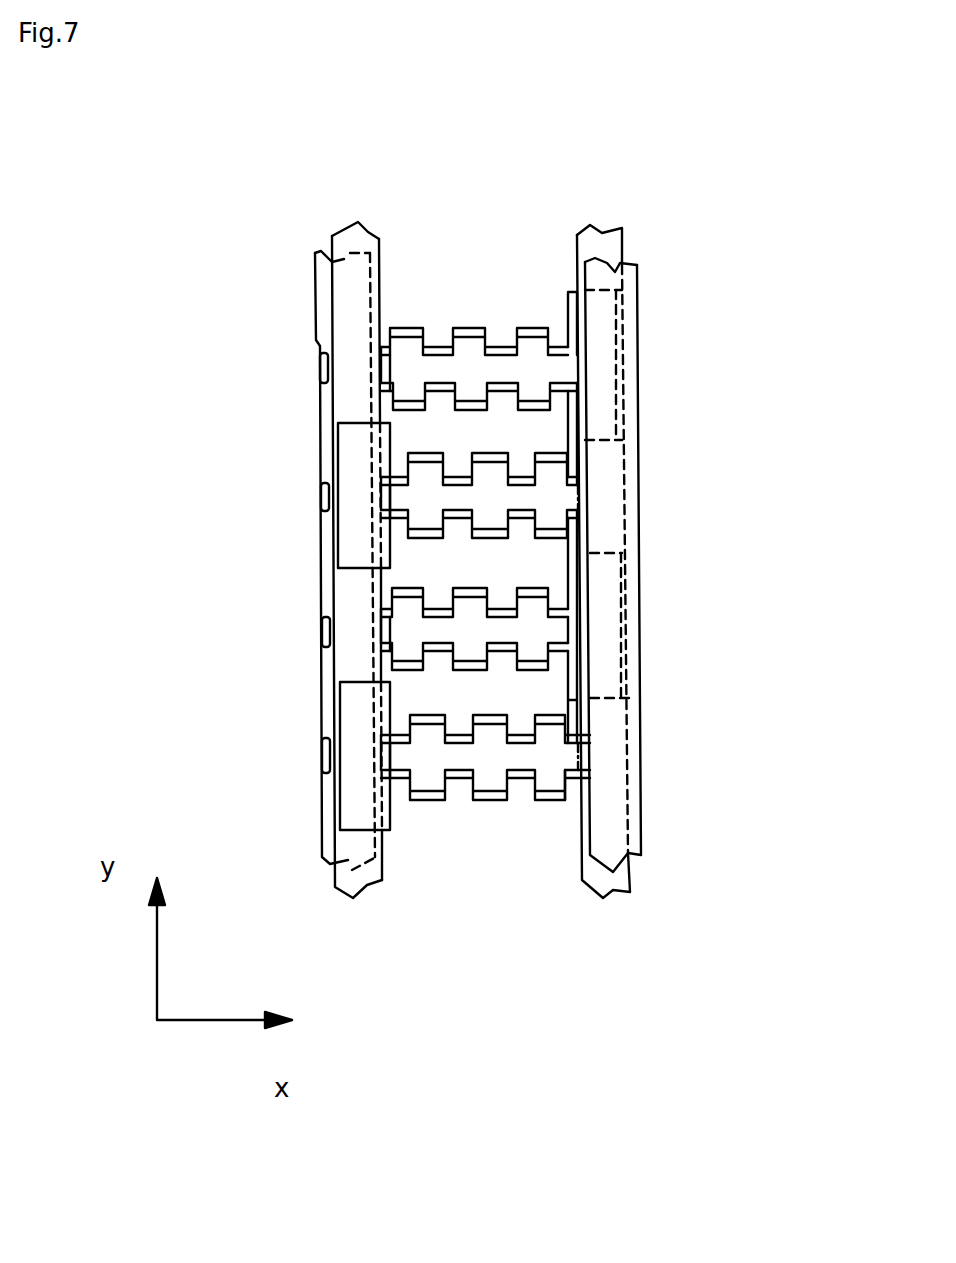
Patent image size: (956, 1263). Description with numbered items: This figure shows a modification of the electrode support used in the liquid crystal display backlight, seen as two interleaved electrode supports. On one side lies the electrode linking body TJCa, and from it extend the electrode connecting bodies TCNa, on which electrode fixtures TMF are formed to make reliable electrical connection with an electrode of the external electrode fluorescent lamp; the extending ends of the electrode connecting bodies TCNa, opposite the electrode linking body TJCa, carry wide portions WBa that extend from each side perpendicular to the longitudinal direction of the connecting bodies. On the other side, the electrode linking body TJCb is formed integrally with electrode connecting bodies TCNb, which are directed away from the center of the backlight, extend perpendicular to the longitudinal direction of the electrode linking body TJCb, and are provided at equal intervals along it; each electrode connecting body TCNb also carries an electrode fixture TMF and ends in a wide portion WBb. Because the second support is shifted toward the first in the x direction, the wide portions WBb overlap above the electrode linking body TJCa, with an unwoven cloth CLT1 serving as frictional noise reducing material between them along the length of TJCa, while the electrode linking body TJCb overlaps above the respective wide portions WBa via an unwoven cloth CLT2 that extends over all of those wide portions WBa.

The unwoven cloth CLT1 is at (364, 228).
The unwoven cloth CLT2 is at (607, 233).
The electrode fixture TMF is at (458, 327).
The wide portion WBa is at (563, 307).
The wide portion WBb is at (350, 422).
The electrode connecting body TCNa is at (556, 368).
The electrode connecting body TCNb is at (452, 757).
The electrode linking body TJCa is at (318, 540).
The electrode linking body TJCb is at (640, 502).